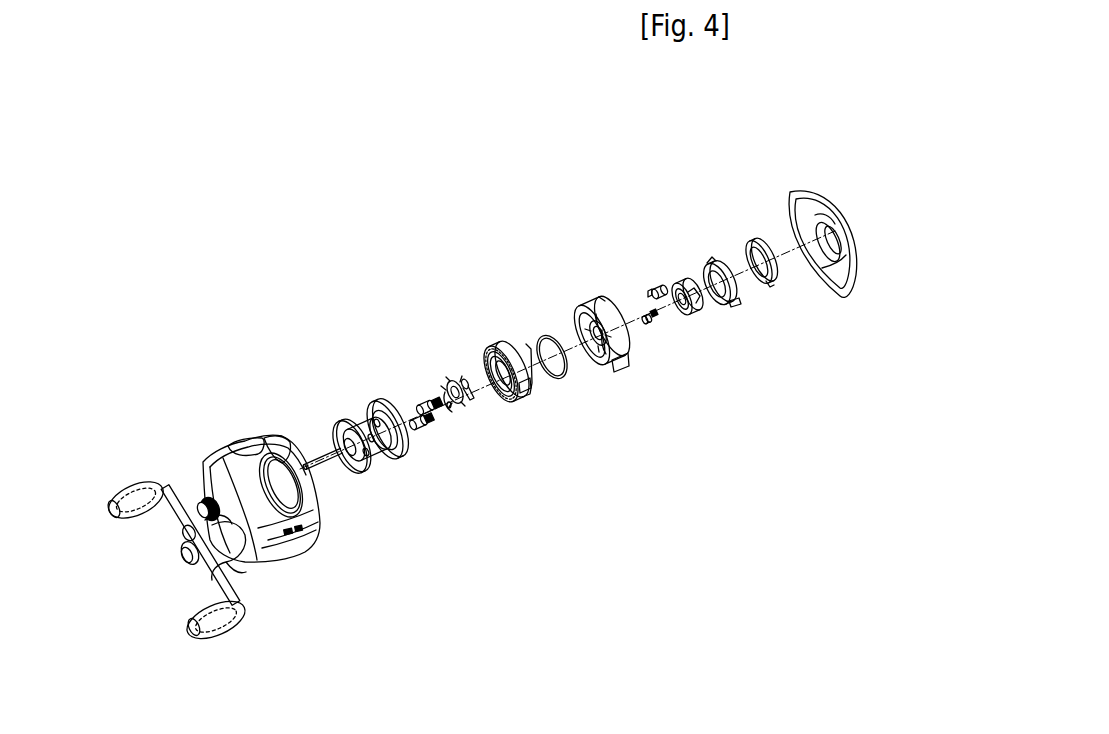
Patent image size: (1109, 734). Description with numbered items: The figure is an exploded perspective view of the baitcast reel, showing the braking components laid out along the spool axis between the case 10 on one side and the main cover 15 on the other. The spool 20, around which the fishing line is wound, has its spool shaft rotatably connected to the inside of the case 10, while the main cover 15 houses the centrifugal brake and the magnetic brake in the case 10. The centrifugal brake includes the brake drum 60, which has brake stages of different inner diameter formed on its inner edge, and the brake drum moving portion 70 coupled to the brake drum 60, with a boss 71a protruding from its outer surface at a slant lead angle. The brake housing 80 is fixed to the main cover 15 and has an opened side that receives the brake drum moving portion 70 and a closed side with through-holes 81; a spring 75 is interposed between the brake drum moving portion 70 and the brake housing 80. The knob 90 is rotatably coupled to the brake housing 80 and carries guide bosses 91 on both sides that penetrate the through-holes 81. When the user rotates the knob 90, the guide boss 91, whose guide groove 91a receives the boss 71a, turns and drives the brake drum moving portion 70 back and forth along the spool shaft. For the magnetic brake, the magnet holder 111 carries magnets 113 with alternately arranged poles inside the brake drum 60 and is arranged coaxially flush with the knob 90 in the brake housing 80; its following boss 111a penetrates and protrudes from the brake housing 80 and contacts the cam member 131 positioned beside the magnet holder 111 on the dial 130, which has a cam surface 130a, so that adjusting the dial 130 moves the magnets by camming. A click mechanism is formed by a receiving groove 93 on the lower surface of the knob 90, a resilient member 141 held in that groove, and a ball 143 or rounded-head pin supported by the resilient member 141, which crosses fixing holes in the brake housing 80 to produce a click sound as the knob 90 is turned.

The case 10 is at (212, 486).
The main cover 15 is at (820, 190).
The spool 20 is at (365, 412).
The brake drum 60 is at (496, 403).
The brake drum moving portion 70 is at (497, 350).
The boss 71a is at (500, 348).
The spring 75 is at (548, 335).
The brake housing 80 is at (620, 352).
The through-holes 81 is at (597, 297).
The knob 90 is at (685, 277).
The guide bosses 91 is at (655, 287).
The guide groove 91a is at (647, 292).
The receiving groove 93 is at (703, 287).
The magnet holder 111 is at (450, 387).
The following boss 111a is at (462, 378).
The magnets 113 is at (443, 390).
The dial 130 is at (763, 230).
The cam surface 130a is at (763, 287).
The cam member 131 is at (720, 250).
The resilient member 141 is at (417, 430).
The ball 143 is at (440, 423).